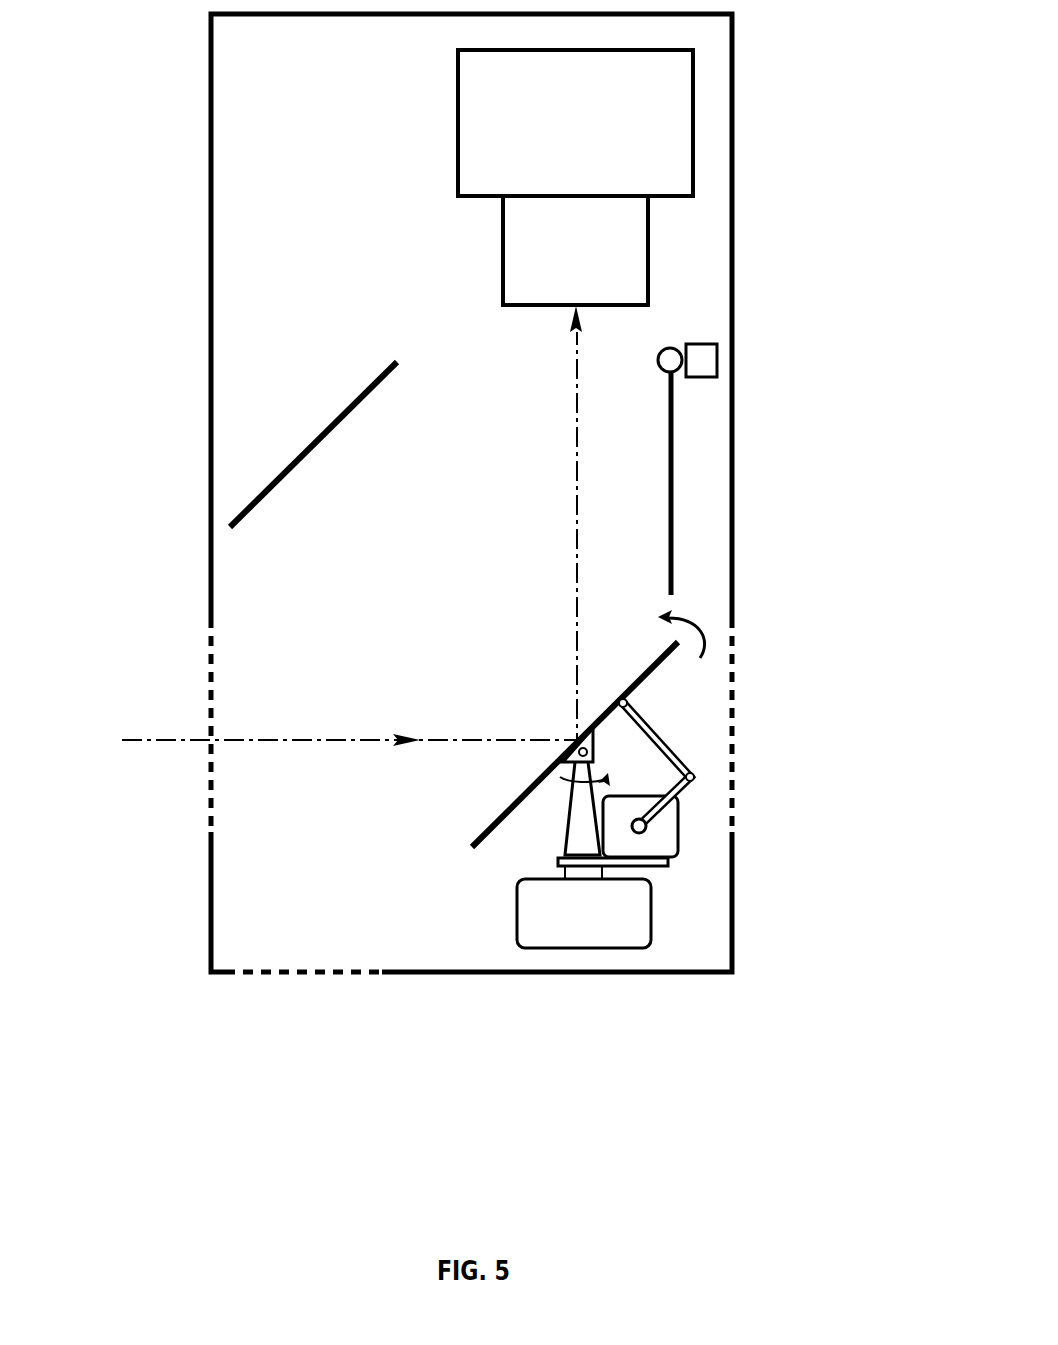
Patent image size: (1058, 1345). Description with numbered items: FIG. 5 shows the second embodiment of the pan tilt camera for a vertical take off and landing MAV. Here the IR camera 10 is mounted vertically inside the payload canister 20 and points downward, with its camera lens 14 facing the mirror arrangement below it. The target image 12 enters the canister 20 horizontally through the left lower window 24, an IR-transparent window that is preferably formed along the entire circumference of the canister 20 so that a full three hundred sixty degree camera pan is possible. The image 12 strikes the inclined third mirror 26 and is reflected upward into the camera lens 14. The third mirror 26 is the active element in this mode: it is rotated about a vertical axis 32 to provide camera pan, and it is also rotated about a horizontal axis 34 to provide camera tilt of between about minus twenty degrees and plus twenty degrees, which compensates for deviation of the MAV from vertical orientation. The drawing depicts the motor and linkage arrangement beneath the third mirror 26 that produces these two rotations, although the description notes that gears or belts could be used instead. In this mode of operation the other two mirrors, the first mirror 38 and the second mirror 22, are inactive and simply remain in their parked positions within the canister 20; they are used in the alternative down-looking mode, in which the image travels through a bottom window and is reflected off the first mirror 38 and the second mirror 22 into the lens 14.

The IR camera 10 is at (652, 127).
The target image 12 is at (178, 740).
The camera lens 14 is at (622, 258).
The payload canister 20 is at (211, 198).
The mirror M2 22 is at (671, 526).
The left lower window 24 is at (211, 677).
The mirror M3 26 is at (660, 675).
The vertical axis 32 is at (562, 782).
The horizontal axis 34 is at (703, 635).
The mirror M1 38 is at (272, 482).